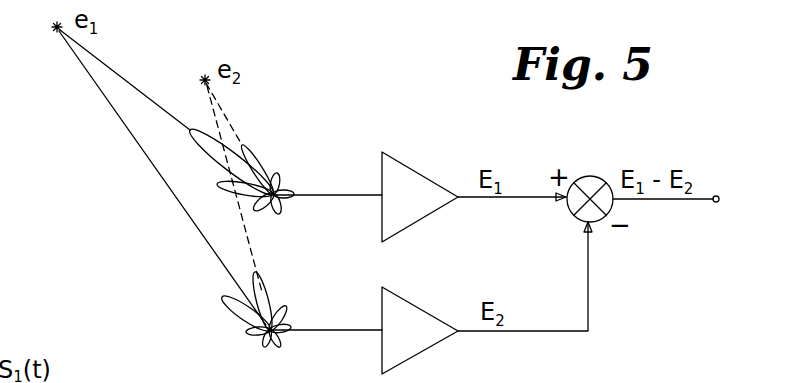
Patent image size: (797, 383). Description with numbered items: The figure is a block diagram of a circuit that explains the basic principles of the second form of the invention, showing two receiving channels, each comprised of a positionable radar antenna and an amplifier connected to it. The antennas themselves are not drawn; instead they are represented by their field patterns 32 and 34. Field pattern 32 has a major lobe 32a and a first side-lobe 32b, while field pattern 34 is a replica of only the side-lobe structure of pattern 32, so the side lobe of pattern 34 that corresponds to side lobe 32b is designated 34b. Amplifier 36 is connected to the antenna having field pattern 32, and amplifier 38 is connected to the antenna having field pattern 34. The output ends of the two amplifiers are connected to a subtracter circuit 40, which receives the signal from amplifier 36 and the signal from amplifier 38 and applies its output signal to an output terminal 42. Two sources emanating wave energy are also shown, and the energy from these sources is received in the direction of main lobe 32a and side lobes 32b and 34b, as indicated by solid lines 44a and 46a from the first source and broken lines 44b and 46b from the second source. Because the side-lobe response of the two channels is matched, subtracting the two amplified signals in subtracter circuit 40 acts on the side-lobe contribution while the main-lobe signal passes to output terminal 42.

The field pattern 32 is at (272, 149).
The major lobe 32a is at (199, 106).
The first side-lobe 32b is at (257, 159).
The field pattern 34 is at (300, 305).
The side lobe 34b is at (262, 284).
The amplifier 36 is at (417, 151).
The amplifier 38 is at (417, 286).
The subtracter circuit 40 is at (573, 216).
The output terminal 42 is at (716, 203).
The solid line 44a is at (104, 64).
The broken line 44b is at (229, 120).
The solid line 46a is at (137, 140).
The broken line 46b is at (248, 242).